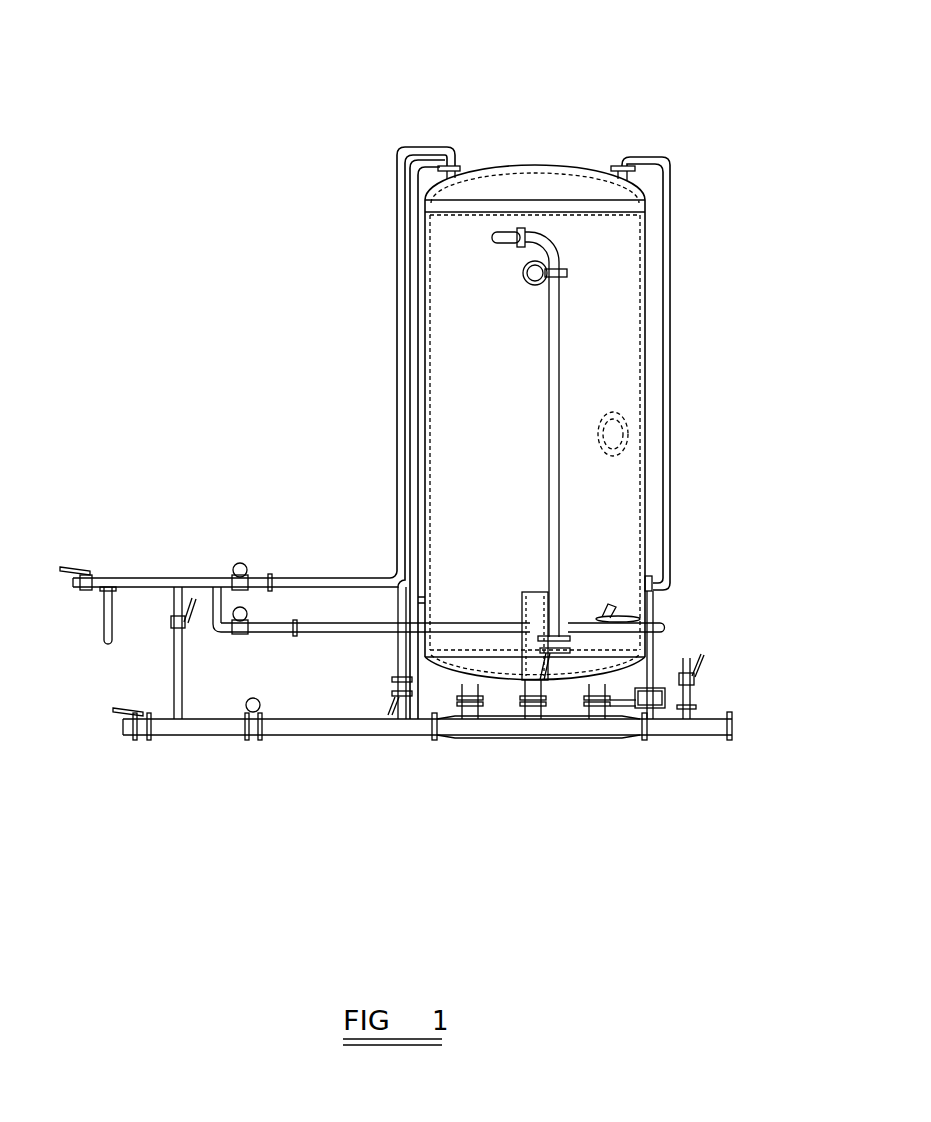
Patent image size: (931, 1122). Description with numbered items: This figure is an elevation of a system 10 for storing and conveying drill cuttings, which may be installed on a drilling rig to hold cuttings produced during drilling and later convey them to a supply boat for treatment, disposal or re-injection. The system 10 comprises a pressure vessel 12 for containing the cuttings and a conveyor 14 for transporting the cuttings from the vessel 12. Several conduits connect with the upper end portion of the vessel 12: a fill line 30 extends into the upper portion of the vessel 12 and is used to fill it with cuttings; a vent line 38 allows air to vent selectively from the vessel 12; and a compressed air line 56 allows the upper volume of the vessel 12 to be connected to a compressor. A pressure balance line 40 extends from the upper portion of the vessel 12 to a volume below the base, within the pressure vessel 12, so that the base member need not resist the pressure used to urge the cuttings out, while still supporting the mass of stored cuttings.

The system 10 is at (322, 247).
The pressure vessel 12 is at (535, 167).
The conveyor 14 is at (566, 737).
The fill line 30 is at (560, 333).
The vent line 38 is at (402, 148).
The pressure balance line 40 is at (668, 450).
The compressed air line 56 is at (428, 145).